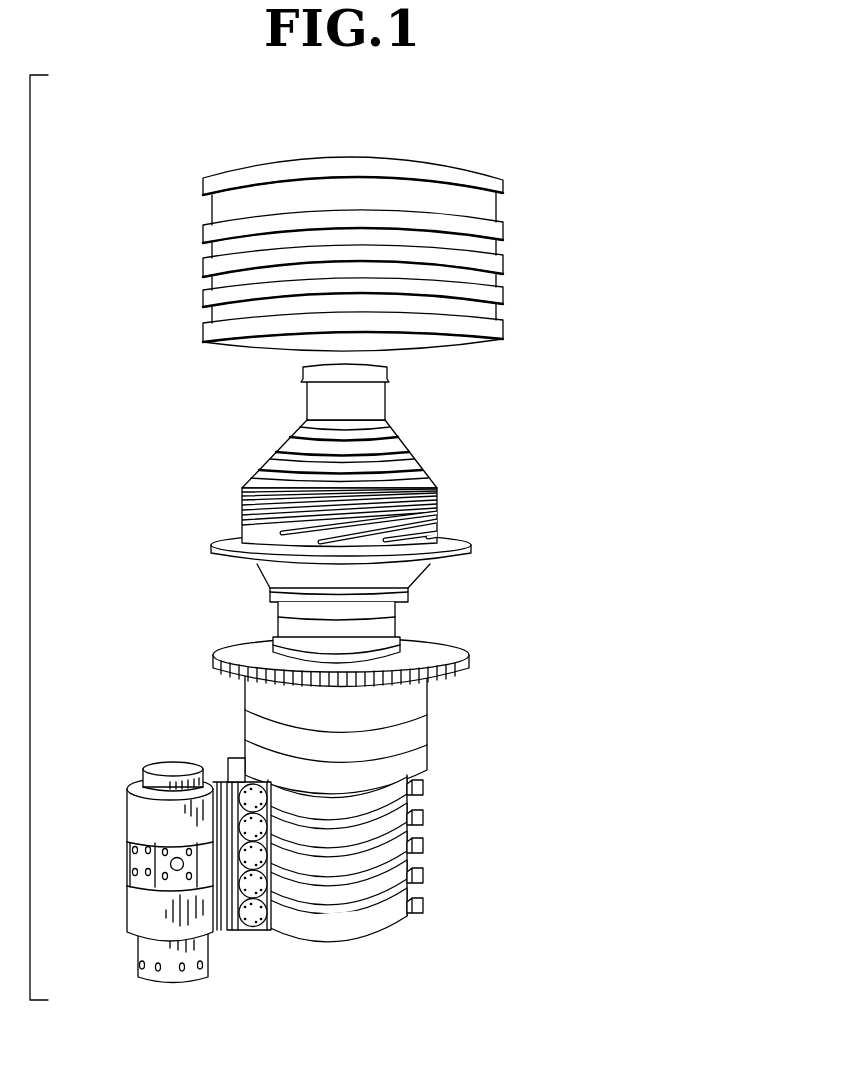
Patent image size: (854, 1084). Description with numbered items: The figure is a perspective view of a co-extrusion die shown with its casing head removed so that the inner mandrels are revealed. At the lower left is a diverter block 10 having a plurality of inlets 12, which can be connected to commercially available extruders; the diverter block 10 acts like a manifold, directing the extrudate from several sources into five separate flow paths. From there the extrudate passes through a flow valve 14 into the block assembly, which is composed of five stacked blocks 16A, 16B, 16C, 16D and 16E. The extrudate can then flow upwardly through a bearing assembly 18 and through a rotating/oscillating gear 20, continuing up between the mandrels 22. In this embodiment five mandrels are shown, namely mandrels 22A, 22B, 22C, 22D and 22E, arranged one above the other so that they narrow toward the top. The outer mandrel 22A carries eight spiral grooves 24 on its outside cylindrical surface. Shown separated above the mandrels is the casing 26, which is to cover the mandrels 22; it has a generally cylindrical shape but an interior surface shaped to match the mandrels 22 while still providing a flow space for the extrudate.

The diverter block 10 is at (140, 872).
The inlets 12 is at (135, 865).
The flow valve 14 is at (232, 930).
The block 16A is at (388, 928).
The block 16B is at (407, 878).
The block 16C is at (400, 855).
The block 16D is at (412, 835).
The block 16E is at (398, 800).
The bearing assembly 18 is at (410, 700).
The rotating/oscillating gear 20 is at (469, 661).
The mandrels 22 is at (326, 455).
The outer mandrel 22A is at (432, 476).
The mandrel 22B is at (413, 460).
The mandrel 22C is at (408, 436).
The mandrel 22D is at (388, 430).
The mandrel 22E is at (368, 406).
The spiral grooves 24 is at (291, 517).
The casing 26 is at (486, 253).